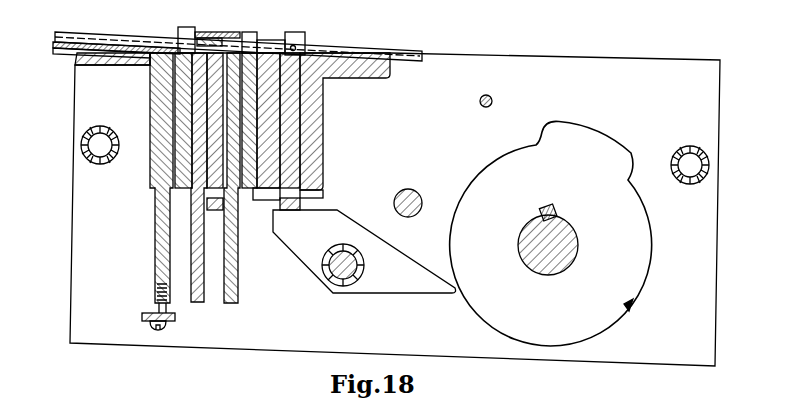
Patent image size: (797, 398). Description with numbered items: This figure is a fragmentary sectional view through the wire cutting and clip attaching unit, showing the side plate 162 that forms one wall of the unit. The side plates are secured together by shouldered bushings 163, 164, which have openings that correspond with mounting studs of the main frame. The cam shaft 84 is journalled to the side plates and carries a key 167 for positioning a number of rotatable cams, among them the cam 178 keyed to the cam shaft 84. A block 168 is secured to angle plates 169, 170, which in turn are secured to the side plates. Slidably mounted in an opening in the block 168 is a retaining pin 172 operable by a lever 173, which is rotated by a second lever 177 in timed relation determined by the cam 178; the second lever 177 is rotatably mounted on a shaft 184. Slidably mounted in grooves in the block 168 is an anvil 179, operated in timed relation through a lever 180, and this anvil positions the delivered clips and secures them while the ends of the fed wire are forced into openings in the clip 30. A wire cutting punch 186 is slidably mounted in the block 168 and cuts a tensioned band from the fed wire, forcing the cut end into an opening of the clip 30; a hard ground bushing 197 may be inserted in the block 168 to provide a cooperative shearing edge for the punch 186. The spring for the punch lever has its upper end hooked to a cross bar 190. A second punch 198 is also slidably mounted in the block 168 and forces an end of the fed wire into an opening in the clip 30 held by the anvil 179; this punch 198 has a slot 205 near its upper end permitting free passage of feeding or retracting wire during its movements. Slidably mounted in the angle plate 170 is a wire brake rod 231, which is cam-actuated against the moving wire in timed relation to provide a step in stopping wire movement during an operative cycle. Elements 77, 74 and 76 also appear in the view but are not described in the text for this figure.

The side plate 162 is at (714, 287).
The shaft 77 is at (124, 32).
The link 74 is at (55, 38).
The sleeve 76 is at (62, 57).
The slot 205 is at (218, 57).
The hard ground bushing 197 is at (232, 60).
The angle plate 170 is at (150, 106).
The wire brake rod 231 is at (158, 262).
The second punch 198 is at (200, 304).
The lever 180 is at (236, 220).
The wire cutting punch 186 is at (240, 297).
The angle plate 169 is at (318, 158).
The block 168 is at (325, 130).
The lever 173 is at (300, 200).
The clip 30 is at (218, 30).
The anvil 179 is at (226, 32).
The retaining pin 172 is at (300, 40).
The shouldered bushing 164 is at (110, 163).
The shouldered bushing 163 is at (690, 146).
The shaft 184 is at (340, 288).
The second lever 177 is at (413, 291).
The cross bar 190 is at (492, 101).
The cam 178 is at (612, 300).
The cam shaft 84 is at (566, 262).
The key 167 is at (553, 209).